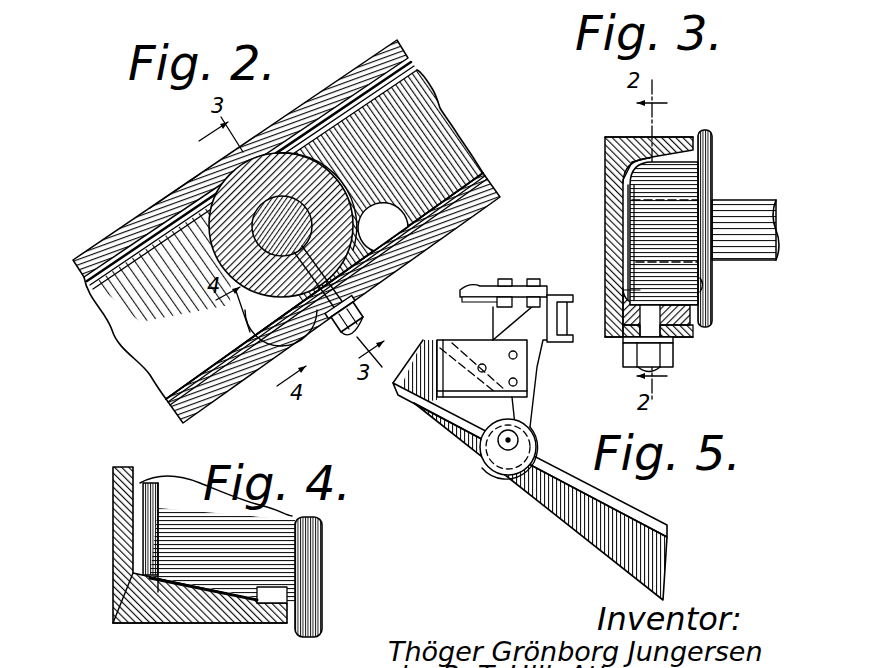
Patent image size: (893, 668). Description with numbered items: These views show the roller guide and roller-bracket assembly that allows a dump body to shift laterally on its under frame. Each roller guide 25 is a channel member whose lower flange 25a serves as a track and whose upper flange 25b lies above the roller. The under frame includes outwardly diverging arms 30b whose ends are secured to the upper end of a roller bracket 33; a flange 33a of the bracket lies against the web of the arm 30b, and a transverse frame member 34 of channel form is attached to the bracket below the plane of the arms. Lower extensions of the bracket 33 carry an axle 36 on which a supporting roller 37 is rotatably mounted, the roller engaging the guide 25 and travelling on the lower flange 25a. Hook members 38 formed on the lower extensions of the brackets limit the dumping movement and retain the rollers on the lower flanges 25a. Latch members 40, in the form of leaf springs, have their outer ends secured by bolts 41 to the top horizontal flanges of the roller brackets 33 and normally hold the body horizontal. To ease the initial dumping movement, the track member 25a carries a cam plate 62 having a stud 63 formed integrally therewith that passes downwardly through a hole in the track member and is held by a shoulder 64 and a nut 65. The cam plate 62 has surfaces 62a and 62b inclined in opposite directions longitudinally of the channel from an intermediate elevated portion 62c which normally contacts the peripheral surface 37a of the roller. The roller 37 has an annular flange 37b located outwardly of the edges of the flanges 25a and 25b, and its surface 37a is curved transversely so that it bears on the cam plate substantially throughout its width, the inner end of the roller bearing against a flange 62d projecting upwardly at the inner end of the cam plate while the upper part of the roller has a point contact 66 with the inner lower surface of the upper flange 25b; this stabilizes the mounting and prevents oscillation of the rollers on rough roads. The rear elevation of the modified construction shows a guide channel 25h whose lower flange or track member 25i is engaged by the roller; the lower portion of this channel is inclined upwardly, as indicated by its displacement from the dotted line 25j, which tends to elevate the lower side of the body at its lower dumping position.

In FIG. 2, the roller guide 25 is at (440, 109).
In FIG. 3, the roller guide 25 is at (605, 192).
In FIG. 4, the roller guide 25 is at (113, 548).
In FIG. 3, the lower flange 25a is at (608, 338).
In FIG. 4, the lower flange 25a is at (200, 621).
In FIG. 2, the upper flange 25b is at (393, 41).
In FIG. 3, the upper flange 25b is at (605, 138).
In FIG. 5, the guide channel 25h is at (463, 407).
In FIG. 5, the lower flange or track member 25i is at (547, 505).
In FIG. 5, the dotted line 25j is at (622, 568).
In FIG. 5, the outwardly diverging parts 30b is at (571, 317).
In FIG. 5, the roller bracket 33 is at (538, 367).
In FIG. 5, the flange 33a is at (490, 299).
In FIG. 5, the transverse frame member 34 is at (463, 347).
In FIG. 2, the axle 36 is at (175, 191).
In FIG. 3, the axle 36 is at (752, 200).
In FIG. 5, the axle 36 is at (497, 457).
In FIG. 2, the supporting roller 37 is at (210, 247).
In FIG. 3, the supporting roller 37 is at (712, 175).
In FIG. 4, the supporting roller 37 is at (289, 517).
In FIG. 2, the peripheral surface 37a is at (380, 203).
In FIG. 3, the peripheral surface 37a is at (637, 290).
In FIG. 4, the peripheral surface 37a is at (258, 605).
In FIG. 5, the peripheral surface 37a is at (537, 430).
In FIG. 3, the annular flange 37b is at (708, 130).
In FIG. 4, the annular flange 37b is at (324, 625).
In FIG. 5, the hook member 38 is at (490, 445).
In FIG. 5, the latch member 40 is at (463, 285).
In FIG. 5, the bolt 41 is at (503, 280).
In FIG. 2, the cam plate 62 is at (307, 296).
In FIG. 3, the cam plate 62 is at (692, 317).
In FIG. 4, the cam plate 62 is at (113, 624).
In FIG. 2, the inclined surface 62a is at (434, 252).
In FIG. 4, the inclined surface 62a is at (140, 519).
In FIG. 2, the inclined surface 62b is at (247, 310).
In FIG. 4, the inclined surface 62b is at (310, 573).
In FIG. 2, the intermediate elevated portion 62c is at (352, 209).
In FIG. 3, the intermediate elevated portion 62c is at (712, 284).
In FIG. 3, the flange 62d is at (620, 265).
In FIG. 2, the stud 63 is at (358, 303).
In FIG. 3, the stud 63 is at (692, 338).
In FIG. 2, the shoulder 64 is at (364, 317).
In FIG. 3, the shoulder 64 is at (675, 348).
In FIG. 2, the nut 65 is at (340, 334).
In FIG. 3, the nut 65 is at (666, 360).
In FIG. 3, the point contact 66 is at (662, 137).